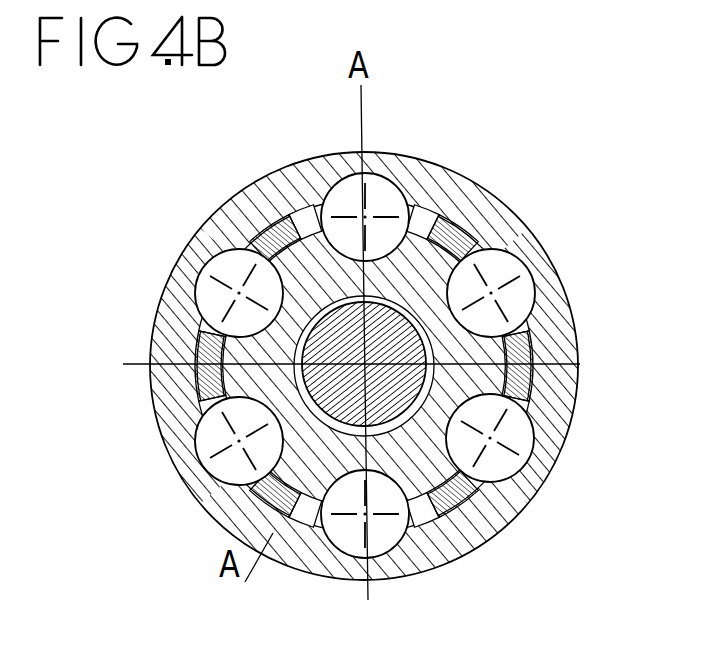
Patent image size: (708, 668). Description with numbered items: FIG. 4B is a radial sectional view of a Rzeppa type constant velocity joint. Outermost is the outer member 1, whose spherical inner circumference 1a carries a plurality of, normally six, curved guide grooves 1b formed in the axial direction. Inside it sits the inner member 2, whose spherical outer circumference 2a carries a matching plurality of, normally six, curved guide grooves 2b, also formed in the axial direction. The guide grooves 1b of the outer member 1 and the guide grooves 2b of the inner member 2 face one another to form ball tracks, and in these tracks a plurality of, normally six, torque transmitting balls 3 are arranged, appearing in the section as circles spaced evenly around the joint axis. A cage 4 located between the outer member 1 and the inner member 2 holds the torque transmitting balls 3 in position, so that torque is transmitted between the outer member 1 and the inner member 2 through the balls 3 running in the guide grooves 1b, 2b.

The outer member 1 is at (220, 195).
The spherical inner circumference 1a is at (520, 328).
The curved guide grooves 1b is at (345, 182).
The inner member 2 is at (452, 242).
The spherical outer circumference 2a is at (526, 398).
The curved guide grooves 2b is at (382, 237).
The torque transmitting balls 3 is at (326, 192).
The cage 4 is at (449, 217).